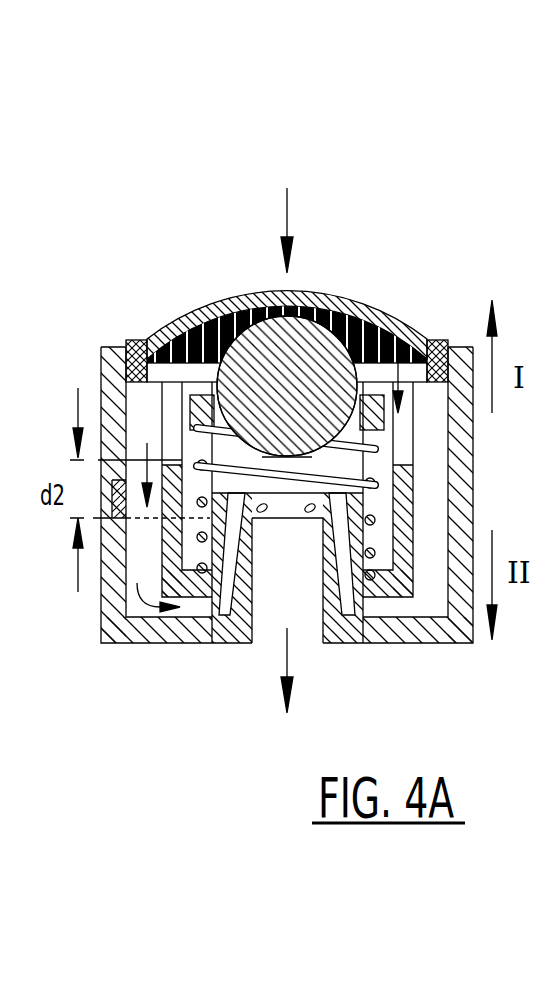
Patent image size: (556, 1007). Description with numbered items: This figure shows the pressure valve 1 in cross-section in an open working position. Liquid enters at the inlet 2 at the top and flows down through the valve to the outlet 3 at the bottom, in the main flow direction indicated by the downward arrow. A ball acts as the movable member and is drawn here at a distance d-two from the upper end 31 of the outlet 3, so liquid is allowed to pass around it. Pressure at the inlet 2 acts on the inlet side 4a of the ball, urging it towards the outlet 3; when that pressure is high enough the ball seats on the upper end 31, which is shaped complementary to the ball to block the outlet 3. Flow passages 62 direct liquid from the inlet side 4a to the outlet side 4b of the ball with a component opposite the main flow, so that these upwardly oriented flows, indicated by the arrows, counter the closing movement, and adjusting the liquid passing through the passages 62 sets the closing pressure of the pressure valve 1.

The pressure valve 1 is at (310, 397).
The inlet 2 is at (413, 247).
The outlet 3 is at (347, 687).
The inlet side of the ball 4a is at (238, 353).
The outlet side of the ball 4b is at (352, 465).
The upper end of the outlet 31 is at (345, 498).
The flow passages 62 is at (236, 518).